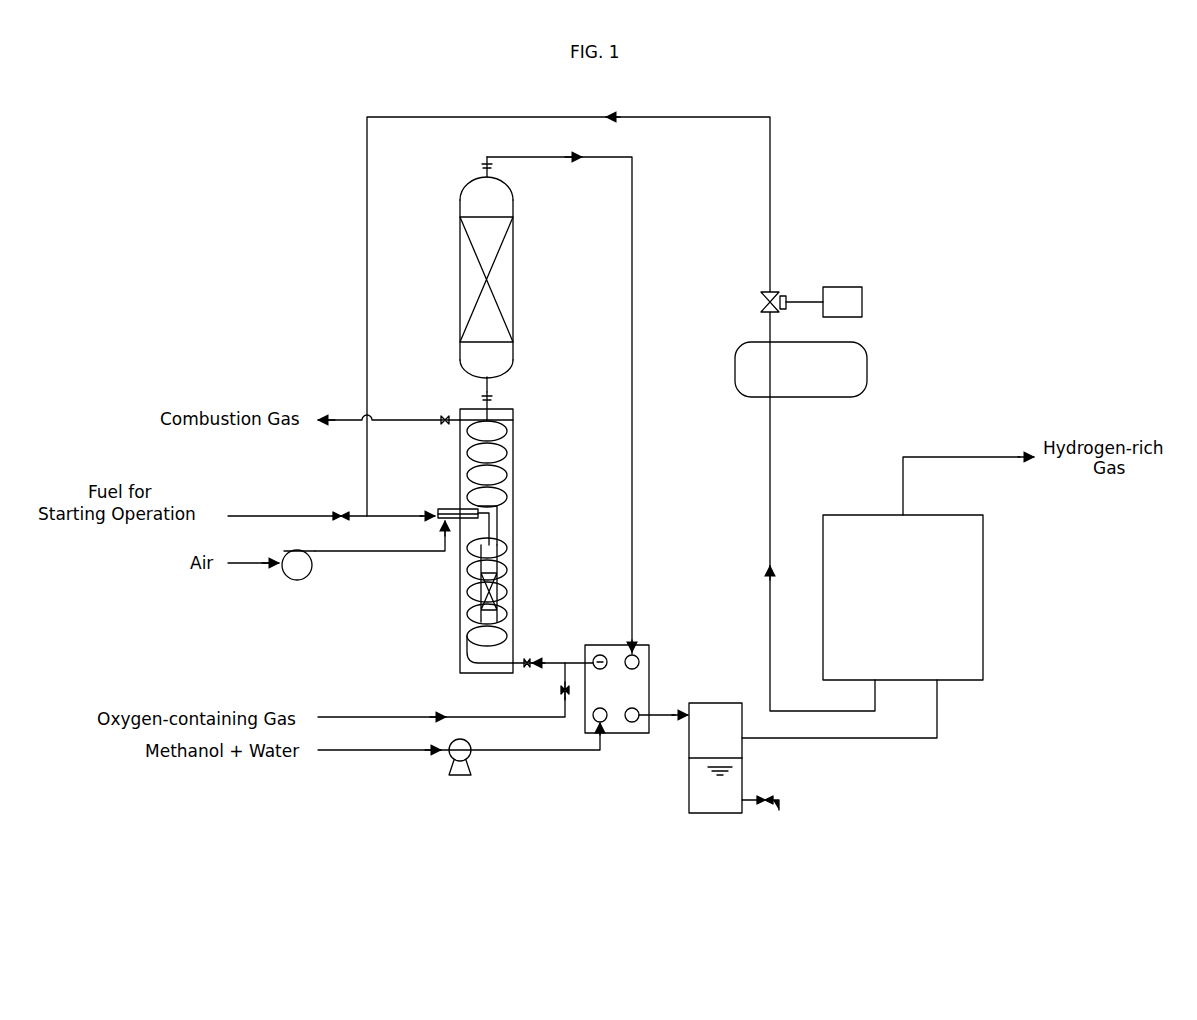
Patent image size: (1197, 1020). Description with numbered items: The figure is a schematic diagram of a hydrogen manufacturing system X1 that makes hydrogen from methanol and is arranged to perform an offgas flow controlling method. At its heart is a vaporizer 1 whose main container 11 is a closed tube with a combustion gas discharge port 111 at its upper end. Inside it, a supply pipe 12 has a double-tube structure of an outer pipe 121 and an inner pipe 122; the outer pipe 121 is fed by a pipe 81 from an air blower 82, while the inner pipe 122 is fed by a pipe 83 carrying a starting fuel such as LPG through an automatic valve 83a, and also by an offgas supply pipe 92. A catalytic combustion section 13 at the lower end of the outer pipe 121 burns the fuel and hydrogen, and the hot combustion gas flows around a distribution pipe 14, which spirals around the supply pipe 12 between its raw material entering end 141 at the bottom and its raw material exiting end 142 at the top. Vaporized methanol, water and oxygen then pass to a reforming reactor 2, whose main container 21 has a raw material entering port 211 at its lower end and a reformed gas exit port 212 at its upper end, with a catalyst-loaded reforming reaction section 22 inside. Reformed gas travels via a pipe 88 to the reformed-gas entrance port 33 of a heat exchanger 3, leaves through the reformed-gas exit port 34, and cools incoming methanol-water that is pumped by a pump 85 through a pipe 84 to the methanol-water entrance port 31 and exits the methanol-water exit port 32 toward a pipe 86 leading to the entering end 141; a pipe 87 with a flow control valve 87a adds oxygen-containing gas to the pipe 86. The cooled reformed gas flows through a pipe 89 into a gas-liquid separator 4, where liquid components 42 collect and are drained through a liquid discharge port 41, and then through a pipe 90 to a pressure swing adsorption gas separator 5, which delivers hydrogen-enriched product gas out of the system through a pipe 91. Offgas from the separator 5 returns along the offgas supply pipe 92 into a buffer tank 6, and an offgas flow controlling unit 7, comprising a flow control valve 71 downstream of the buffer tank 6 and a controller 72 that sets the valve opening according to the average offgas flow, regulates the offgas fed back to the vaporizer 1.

The hydrogen manufacturing system X1 is at (912, 192).
The vaporizer 1 is at (522, 527).
The main container 11 is at (514, 456).
The supply pipe 12 is at (441, 490).
The outer pipe 121 is at (440, 510).
The inner pipe 122 is at (458, 510).
The catalytic combustion section 13 is at (499, 596).
The distribution pipe 14 is at (508, 496).
The combustion gas discharge port 111 is at (445, 417).
The raw material entering end 141 is at (518, 661).
The raw material exiting end 142 is at (490, 403).
The reforming reactor 2 is at (526, 274).
The main container 21 is at (514, 200).
The reforming reaction section 22 is at (513, 315).
The raw material entering port 211 is at (490, 384).
The reformed gas exit port 212 is at (492, 172).
The heat exchanger 3 is at (598, 710).
The methanol-water entrance port 31 is at (592, 718).
The methanol-water exit port 32 is at (600, 655).
The reformed-gas entrance port 33 is at (630, 655).
The reformed-gas exit port 34 is at (629, 724).
The gas-liquid separator 4 is at (747, 747).
The liquid discharge port 41 is at (776, 798).
The liquid components 42 is at (712, 814).
The pressure swing adsorption gas separator 5 is at (1002, 603).
The buffer tank 6 is at (874, 370).
The offgas flow controlling unit 7 is at (811, 261).
The flow control valve 71 is at (774, 293).
The controller 72 is at (787, 240).
The pipe 81 is at (359, 552).
The air blower 82 is at (299, 580).
The pipe 83 is at (269, 516).
The automatic valve 83a is at (339, 514).
The pipe 84 is at (538, 752).
The pump 85 is at (460, 778).
The pipe 86 is at (571, 662).
The pipe 87 is at (469, 717).
The flow control valve 87a is at (562, 692).
The pipe 88 is at (633, 430).
The pipe 89 is at (663, 718).
The pipe 90 is at (885, 740).
The pipe 91 is at (947, 457).
The offgas supply pipe 92 is at (506, 117).